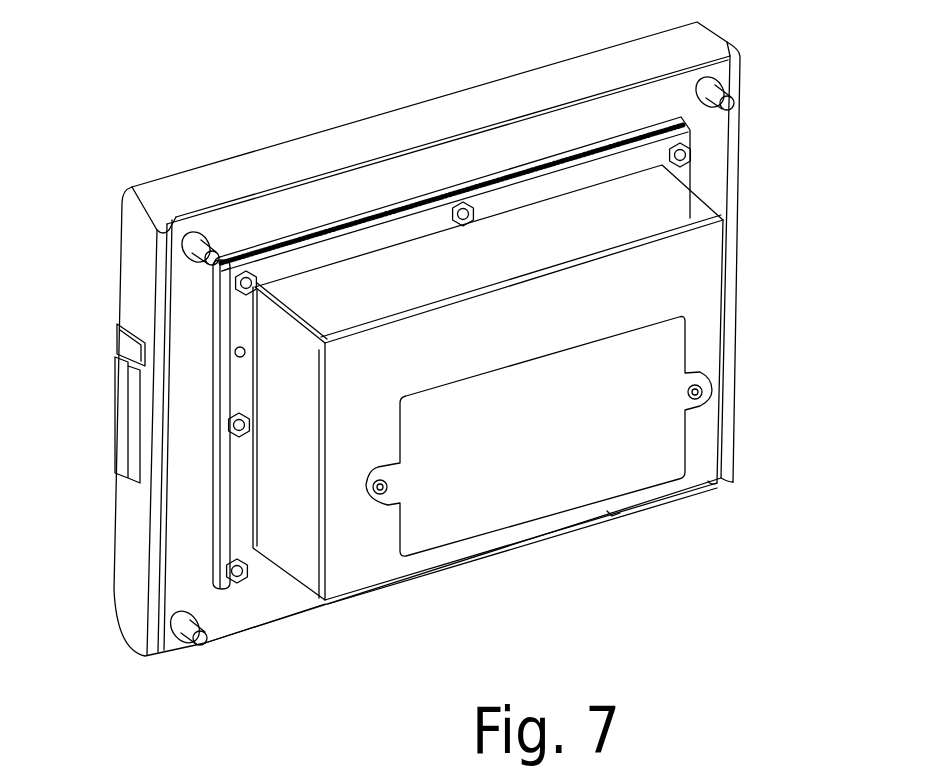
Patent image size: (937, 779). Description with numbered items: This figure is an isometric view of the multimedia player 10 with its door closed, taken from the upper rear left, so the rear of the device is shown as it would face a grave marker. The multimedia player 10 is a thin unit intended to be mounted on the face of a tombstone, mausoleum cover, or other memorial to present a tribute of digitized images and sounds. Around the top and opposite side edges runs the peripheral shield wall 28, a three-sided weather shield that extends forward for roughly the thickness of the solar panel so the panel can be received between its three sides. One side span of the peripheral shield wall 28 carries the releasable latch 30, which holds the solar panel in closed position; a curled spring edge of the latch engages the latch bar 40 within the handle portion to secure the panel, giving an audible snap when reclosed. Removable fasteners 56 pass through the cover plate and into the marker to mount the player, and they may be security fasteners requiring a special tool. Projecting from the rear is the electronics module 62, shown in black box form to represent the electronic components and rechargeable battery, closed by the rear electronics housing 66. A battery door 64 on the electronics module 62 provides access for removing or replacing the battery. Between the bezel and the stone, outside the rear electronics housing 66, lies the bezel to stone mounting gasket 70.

The multimedia player 10 is at (434, 374).
The peripheral shield wall 28 is at (404, 123).
The latch 30 is at (118, 327).
The latch bar 40 is at (113, 420).
The removable fasteners 56 is at (197, 245).
The electronics module 62 is at (727, 455).
The battery door 64 is at (607, 477).
The rear electronics housing 66 is at (337, 543).
The bezel to stone mounting gasket 70 is at (230, 608).